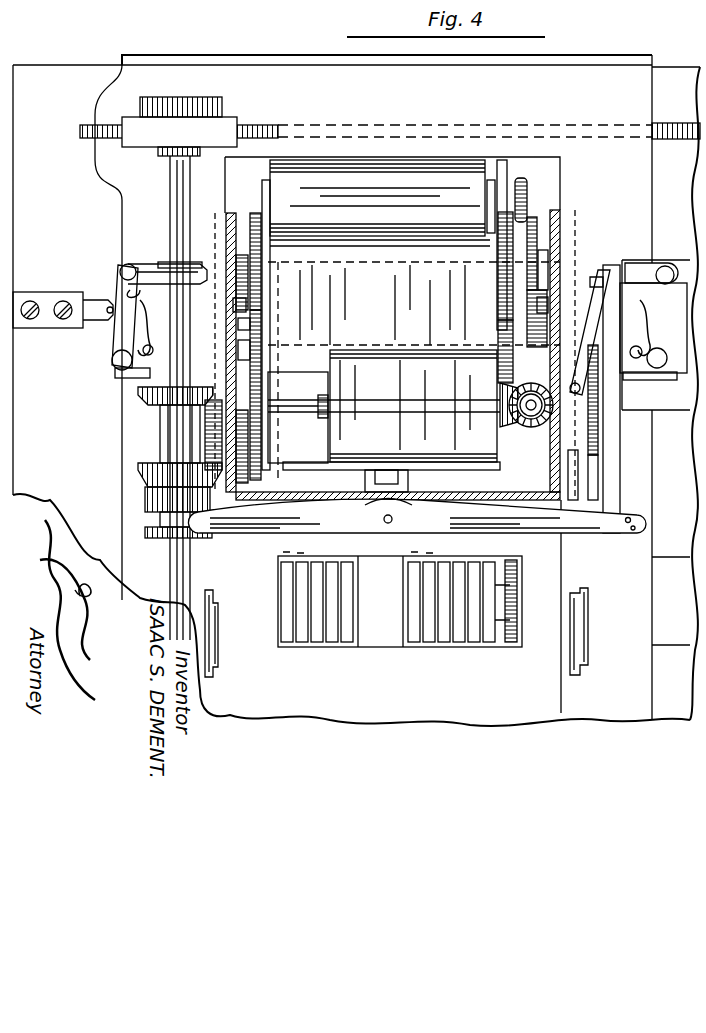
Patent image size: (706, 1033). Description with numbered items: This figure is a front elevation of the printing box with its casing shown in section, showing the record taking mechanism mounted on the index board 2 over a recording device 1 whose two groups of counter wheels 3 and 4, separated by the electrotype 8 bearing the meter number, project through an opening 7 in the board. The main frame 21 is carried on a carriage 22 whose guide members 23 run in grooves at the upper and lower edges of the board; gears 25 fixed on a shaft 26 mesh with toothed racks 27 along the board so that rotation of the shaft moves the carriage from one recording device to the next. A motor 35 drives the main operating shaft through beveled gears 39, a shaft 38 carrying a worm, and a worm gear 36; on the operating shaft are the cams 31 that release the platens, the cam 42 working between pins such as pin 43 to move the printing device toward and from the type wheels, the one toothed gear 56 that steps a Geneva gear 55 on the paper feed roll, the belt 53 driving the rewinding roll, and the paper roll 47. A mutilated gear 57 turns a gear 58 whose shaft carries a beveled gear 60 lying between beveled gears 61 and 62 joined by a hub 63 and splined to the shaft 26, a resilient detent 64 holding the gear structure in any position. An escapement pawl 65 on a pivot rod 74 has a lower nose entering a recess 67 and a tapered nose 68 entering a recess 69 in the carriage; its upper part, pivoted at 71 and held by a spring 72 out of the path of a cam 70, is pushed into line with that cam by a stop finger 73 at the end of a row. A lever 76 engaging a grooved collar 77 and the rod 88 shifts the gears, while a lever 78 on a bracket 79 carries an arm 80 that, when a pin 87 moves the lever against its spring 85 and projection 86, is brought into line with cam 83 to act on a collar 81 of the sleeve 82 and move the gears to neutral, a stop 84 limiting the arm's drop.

The recording device 1 is at (337, 667).
The index board 2 is at (67, 332).
The counter wheels 3 is at (328, 640).
The counter wheels 4 is at (425, 642).
The opening 7 is at (496, 660).
The electrotype 8 is at (380, 640).
The main frame 21 is at (228, 215).
The carriage 22 is at (411, 387).
The guide members 23 is at (218, 55).
The gears 25 is at (258, 125).
The shaft 26 is at (168, 183).
The toothed racks 27 is at (672, 124).
The cam 31 is at (400, 599).
The motor 35 is at (391, 421).
The worm gear 36 is at (534, 218).
The shaft 38 is at (500, 400).
The beveled gears 39 is at (528, 430).
The cam 42 is at (262, 348).
The pin 43 is at (246, 304).
The roll 47 is at (380, 203).
The belt 53 is at (522, 178).
The Geneva gear 55 is at (500, 160).
The one toothed gear 56 is at (500, 272).
The mutilated gear 57 is at (252, 213).
The gear 58 is at (260, 455).
The beveled gear 60 is at (205, 440).
The beveled gear 61 is at (148, 395).
The beveled gear 62 is at (145, 480).
The hub 63 is at (165, 458).
The resilient detent 64 is at (175, 422).
The escapement pawl 65 is at (245, 367).
The recess 67 is at (208, 590).
The tapered nose 68 is at (605, 268).
The recess 69 is at (218, 672).
The cam 70 is at (250, 325).
The pivot 71 is at (590, 395).
The spring 72 is at (598, 430).
The stop finger 73 is at (105, 330).
The pivot rod 74 is at (297, 412).
The lever 76 is at (417, 516).
The grooved collar 77 is at (158, 538).
The lever 78 is at (652, 300).
The bracket 79 is at (640, 380).
The arm 80 is at (656, 262).
The collar 81 is at (200, 262).
The sleeve 82 is at (120, 270).
The cam 83 is at (245, 290).
The stop 84 is at (115, 287).
The spring 85 is at (648, 340).
The projection 86 is at (660, 350).
The pin 87 is at (95, 300).
The rod 88 is at (620, 462).